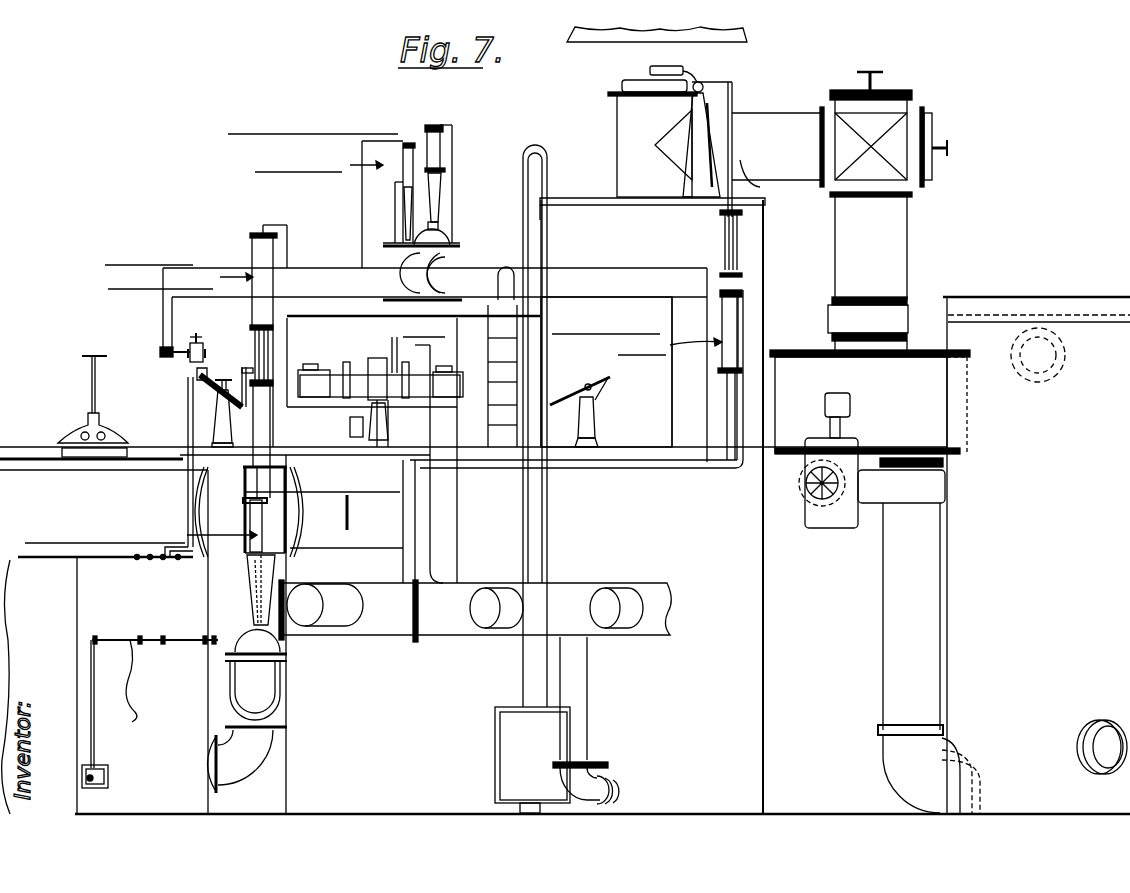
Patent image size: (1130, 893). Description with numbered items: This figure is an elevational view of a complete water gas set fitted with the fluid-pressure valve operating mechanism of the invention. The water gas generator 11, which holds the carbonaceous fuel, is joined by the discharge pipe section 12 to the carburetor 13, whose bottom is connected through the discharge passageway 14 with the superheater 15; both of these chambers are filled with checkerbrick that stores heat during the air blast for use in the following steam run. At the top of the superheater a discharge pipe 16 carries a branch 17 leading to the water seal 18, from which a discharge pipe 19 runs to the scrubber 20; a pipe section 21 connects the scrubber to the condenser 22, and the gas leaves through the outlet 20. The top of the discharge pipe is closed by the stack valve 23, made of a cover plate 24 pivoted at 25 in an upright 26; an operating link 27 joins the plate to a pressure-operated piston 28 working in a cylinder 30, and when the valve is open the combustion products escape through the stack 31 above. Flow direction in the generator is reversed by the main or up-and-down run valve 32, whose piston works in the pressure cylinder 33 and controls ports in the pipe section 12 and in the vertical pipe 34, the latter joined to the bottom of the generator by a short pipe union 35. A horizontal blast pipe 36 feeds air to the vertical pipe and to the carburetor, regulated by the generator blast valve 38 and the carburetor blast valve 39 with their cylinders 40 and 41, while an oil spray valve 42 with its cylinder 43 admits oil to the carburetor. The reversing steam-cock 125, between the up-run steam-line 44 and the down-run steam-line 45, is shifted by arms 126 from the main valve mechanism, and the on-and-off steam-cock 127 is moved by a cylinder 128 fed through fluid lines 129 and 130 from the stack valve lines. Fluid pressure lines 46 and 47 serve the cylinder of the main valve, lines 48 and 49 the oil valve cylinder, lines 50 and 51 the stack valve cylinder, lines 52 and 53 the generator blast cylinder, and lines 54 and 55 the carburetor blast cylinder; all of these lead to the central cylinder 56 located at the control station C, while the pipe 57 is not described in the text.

The water gas generator 11 is at (150, 702).
The discharge pipe section 12 is at (232, 480).
The carburetor 13 is at (222, 642).
The discharge passageway 14 is at (520, 750).
The superheater 15 is at (652, 507).
The discharge pipe 16 is at (637, 124).
The branch 17 is at (785, 128).
The water seal 18 is at (870, 439).
The discharge pipe 19 is at (929, 658).
The scrubber 20 is at (1103, 725).
The pipe section 21 is at (1048, 328).
The condenser 22 is at (1036, 555).
The stack valve 23 is at (676, 72).
The cover plate 24 is at (637, 80).
The pivotal connection 25 is at (706, 88).
The upright 26 is at (678, 157).
The operating link 27 is at (728, 90).
The pressure-operated piston 28 is at (742, 172).
The cylinder 30 is at (750, 305).
The stack 31 is at (578, 42).
The main or up-and-down run valve 32 is at (260, 400).
The pressure cylinder 33 is at (260, 308).
The vertical pipe 34 is at (268, 723).
The short pipe union 35 is at (235, 775).
The blast pipe 36 is at (582, 618).
The generator blast valve 38 is at (238, 630).
The carburetor blast valve 39 is at (433, 238).
The cylinder 40 is at (257, 523).
The cylinder 41 is at (437, 137).
The oil spray valve 42 is at (395, 210).
The cylinder 43 is at (400, 150).
The up-run steam-line 44 is at (121, 683).
The down-run steam-line 45 is at (22, 540).
The fluid pressure line 46 is at (277, 226).
The fluid pressure line 47 is at (287, 303).
The fluid pressure line 48 is at (362, 245).
The fluid pressure line 49 is at (395, 228).
The fluid pressure line 50 is at (710, 402).
The fluid pressure line 51 is at (738, 432).
The fluid pressure line 52 is at (347, 500).
The fluid pressure line 53 is at (378, 548).
The fluid pressure line 54 is at (452, 147).
The fluid pressure line 55 is at (448, 180).
The cylinder 56 is at (413, 383).
The pipe 57 is at (445, 525).
The steam-cock 125 is at (193, 368).
The arms 126 is at (200, 387).
The on-and-off steam-cock 127 is at (185, 338).
The cylinder 128 is at (163, 356).
The fluid line 129 is at (163, 327).
The fluid line 130 is at (172, 307).
The control station C is at (360, 427).